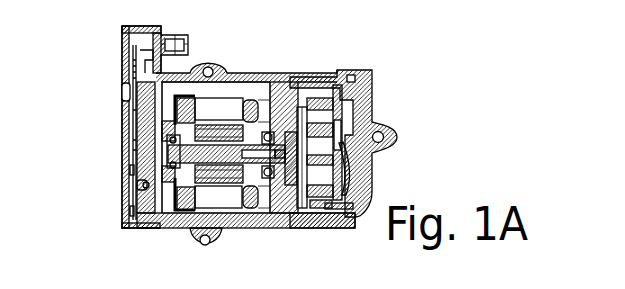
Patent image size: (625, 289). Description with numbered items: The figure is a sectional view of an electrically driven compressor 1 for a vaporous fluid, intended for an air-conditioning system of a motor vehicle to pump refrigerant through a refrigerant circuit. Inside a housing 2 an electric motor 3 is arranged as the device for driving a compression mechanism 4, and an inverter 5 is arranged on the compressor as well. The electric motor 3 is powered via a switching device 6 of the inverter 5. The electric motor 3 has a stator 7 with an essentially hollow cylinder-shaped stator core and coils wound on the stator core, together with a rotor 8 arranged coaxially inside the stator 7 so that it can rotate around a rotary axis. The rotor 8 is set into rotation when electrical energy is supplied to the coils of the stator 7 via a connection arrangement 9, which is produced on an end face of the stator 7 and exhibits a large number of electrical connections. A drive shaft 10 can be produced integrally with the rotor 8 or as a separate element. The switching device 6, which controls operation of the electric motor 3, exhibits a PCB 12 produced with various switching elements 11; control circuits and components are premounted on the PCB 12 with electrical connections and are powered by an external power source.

The electrically driven compressor 1 is at (388, 57).
The housing 2 is at (242, 70).
The electric motor 3 is at (216, 87).
The compression mechanism 4 is at (322, 82).
The inverter 5 is at (119, 46).
The switching device 6 is at (88, 180).
The stator 7 is at (275, 214).
The rotor 8 is at (218, 172).
The connection arrangement 9 is at (137, 96).
The drive shaft 10 is at (185, 215).
The switching elements 11 is at (127, 170).
The PCB 12 is at (128, 185).